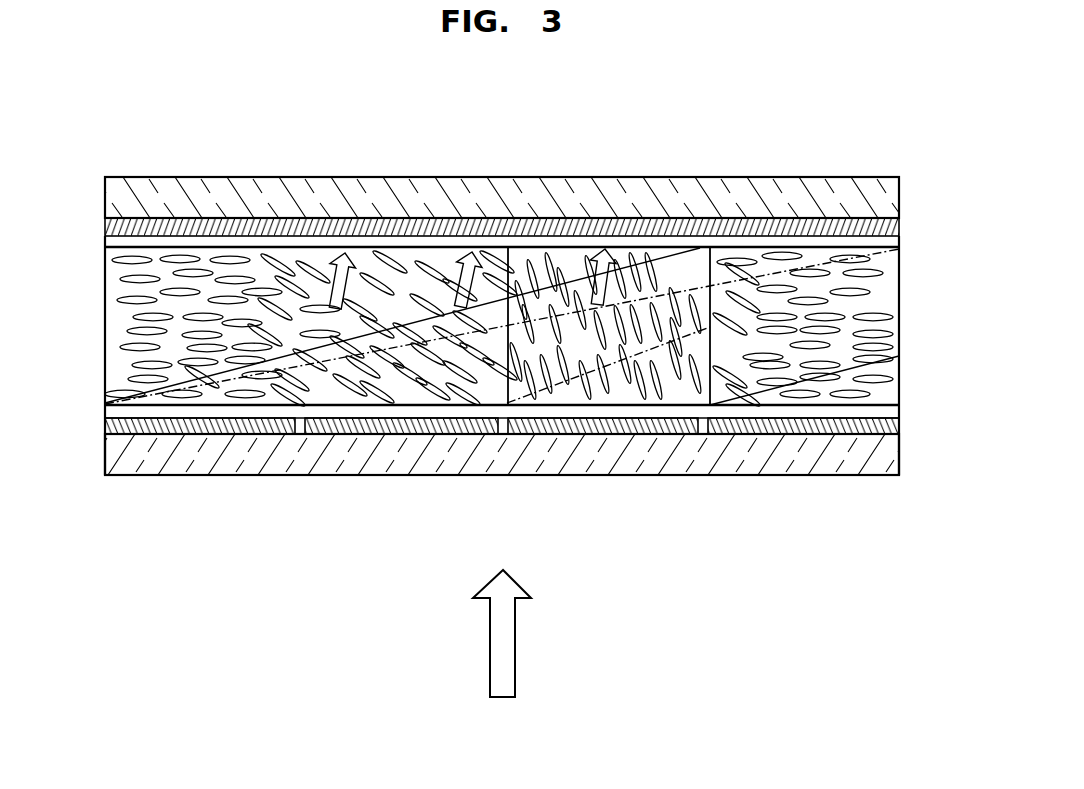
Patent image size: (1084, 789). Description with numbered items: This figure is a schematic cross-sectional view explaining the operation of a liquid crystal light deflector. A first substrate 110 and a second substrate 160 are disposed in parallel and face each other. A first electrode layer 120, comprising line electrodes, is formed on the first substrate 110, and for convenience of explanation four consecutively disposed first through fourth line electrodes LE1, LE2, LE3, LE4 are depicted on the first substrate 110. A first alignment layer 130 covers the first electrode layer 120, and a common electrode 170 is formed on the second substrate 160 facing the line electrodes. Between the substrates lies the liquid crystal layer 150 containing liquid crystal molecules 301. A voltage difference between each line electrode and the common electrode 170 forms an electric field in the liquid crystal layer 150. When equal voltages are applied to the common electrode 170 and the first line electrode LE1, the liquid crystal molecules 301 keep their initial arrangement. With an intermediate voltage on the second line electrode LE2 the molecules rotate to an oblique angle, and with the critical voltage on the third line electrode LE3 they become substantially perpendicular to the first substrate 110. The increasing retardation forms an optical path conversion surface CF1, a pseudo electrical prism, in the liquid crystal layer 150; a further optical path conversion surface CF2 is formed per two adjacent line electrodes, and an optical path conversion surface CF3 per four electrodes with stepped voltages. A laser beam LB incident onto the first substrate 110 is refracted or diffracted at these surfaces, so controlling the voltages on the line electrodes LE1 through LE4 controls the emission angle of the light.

The first substrate 110 is at (502, 454).
The first electrode layer 120 is at (529, 472).
The first alignment layer 130 is at (888, 412).
The liquid crystal layer 150 is at (900, 323).
The second substrate 160 is at (522, 209).
The common electrode 170 is at (900, 229).
The liquid crystal molecules 301 is at (115, 301).
The optical path conversion surface CF1 is at (574, 274).
The optical path conversion surface CF2 is at (432, 258).
The optical path conversion surface CF3 is at (816, 268).
The first line electrode LE1 is at (197, 428).
The second line electrode LE2 is at (398, 428).
The third line electrode LE3 is at (599, 428).
The fourth line electrode LE4 is at (799, 428).
The laser beam LB is at (515, 648).